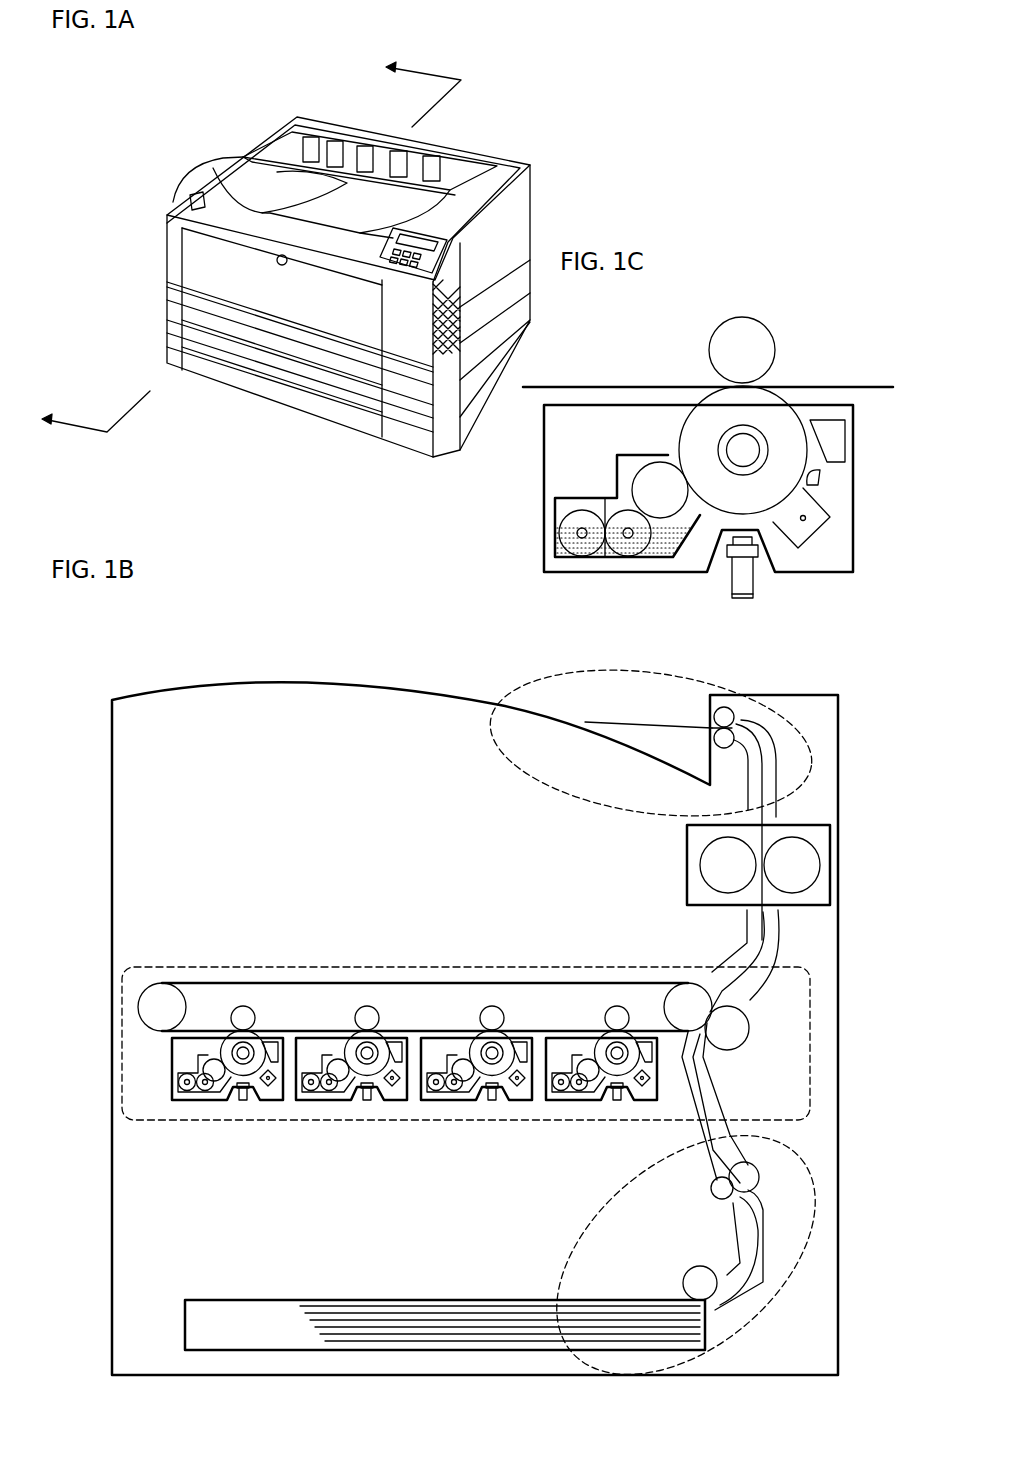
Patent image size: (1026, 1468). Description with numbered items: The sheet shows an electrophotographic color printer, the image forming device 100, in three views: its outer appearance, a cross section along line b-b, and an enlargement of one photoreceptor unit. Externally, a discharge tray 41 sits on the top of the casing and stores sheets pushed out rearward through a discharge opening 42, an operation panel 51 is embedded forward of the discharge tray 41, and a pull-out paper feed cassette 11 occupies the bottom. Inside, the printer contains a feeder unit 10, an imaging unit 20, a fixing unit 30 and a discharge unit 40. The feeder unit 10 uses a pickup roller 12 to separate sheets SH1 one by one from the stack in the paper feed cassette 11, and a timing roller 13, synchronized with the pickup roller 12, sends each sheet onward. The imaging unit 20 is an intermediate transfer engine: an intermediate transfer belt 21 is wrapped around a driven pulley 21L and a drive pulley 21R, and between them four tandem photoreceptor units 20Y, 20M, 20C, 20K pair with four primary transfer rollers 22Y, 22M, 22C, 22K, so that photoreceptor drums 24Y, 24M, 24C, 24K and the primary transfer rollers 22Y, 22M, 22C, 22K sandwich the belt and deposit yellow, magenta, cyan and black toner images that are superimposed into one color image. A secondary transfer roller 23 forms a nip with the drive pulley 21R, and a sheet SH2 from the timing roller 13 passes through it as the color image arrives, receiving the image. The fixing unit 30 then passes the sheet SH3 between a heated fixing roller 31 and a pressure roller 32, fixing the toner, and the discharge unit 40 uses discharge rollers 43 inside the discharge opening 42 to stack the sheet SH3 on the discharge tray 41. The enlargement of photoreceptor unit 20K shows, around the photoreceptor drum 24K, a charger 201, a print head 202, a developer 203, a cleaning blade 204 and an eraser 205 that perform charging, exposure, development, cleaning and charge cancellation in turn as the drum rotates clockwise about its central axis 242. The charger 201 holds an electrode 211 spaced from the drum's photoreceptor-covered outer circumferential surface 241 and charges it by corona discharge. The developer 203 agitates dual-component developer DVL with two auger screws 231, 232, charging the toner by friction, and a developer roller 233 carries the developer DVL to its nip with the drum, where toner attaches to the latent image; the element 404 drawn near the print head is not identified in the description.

In FIG. 1A, the image forming device 100 is at (312, 243).
In FIG. 1B, the image forming device 100 is at (180, 670).
In FIG. 1A, the paper feed cassette 11 is at (200, 345).
In FIG. 1B, the paper feed cassette 11 is at (190, 1310).
In FIG. 1A, the discharge tray 41 is at (317, 165).
In FIG. 1B, the discharge tray 41 is at (578, 725).
In FIG. 1A, the discharge opening 42 is at (357, 142).
In FIG. 1B, the discharge opening 42 is at (710, 722).
In FIG. 1A, the operation panel 51 is at (395, 228).
In FIG. 1B, the feeder unit 10 is at (820, 1240).
In FIG. 1B, the pickup roller 12 is at (698, 1284).
In FIG. 1B, the timing roller 13 is at (760, 1177).
In FIG. 1B, the imaging unit 20 is at (835, 1010).
In FIG. 1B, the photoreceptor unit 20Y is at (221, 1121).
In FIG. 1B, the photoreceptor unit 20M is at (346, 1121).
In FIG. 1B, the photoreceptor unit 20C is at (471, 1121).
In FIG. 1B, the photoreceptor unit 20K is at (596, 1121).
In FIG. 1C, the photoreceptor unit 20K is at (538, 508).
In FIG. 1B, the intermediate transfer belt 21 is at (262, 980).
In FIG. 1C, the intermediate transfer belt 21 is at (573, 385).
In FIG. 1B, the driven pulley 21L is at (158, 1000).
In FIG. 1B, the drive pulley 21R is at (688, 1000).
In FIG. 1B, the primary transfer roller 22Y is at (243, 1010).
In FIG. 1B, the primary transfer roller 22M is at (367, 1010).
In FIG. 1B, the primary transfer roller 22C is at (492, 1010).
In FIG. 1B, the primary transfer roller 22K is at (617, 1010).
In FIG. 1C, the primary transfer roller 22K is at (735, 345).
In FIG. 1B, the secondary transfer roller 23 is at (730, 1032).
In FIG. 1B, the photoreceptor drum 24Y is at (238, 1048).
In FIG. 1B, the photoreceptor drum 24M is at (362, 1048).
In FIG. 1B, the photoreceptor drum 24C is at (487, 1048).
In FIG. 1B, the photoreceptor drum 24K is at (612, 1048).
In FIG. 1C, the photoreceptor drum 24K is at (712, 420).
In FIG. 1B, the fixing unit 30 is at (832, 840).
In FIG. 1B, the fixing roller 31 is at (720, 862).
In FIG. 1B, the pressure roller 32 is at (800, 868).
In FIG. 1B, the discharge unit 40 is at (512, 688).
In FIG. 1B, the discharge rollers 43 is at (725, 715).
In FIG. 1C, the charger 201 is at (830, 512).
In FIG. 1C, the print head 202 is at (750, 552).
In FIG. 1C, the developer 203 is at (615, 477).
In FIG. 1C, the cleaning blade 204 is at (835, 440).
In FIG. 1C, the eraser 205 is at (820, 480).
In FIG. 1C, the electrode 211 is at (806, 521).
In FIG. 1C, the auger screw 231 is at (590, 556).
In FIG. 1C, the auger screw 232 is at (627, 556).
In FIG. 1C, the developer roller 233 is at (663, 500).
In FIG. 1C, the outer circumferential surface 241 is at (762, 432).
In FIG. 1C, the central axis 242 is at (748, 440).
In FIG. 1C, the exposure unit holder 404 is at (740, 585).
In FIG. 1C, the dual-component developer DVL is at (555, 548).
In FIG. 1B, the sheet SH1 is at (760, 1275).
In FIG. 1B, the sheet SH2 is at (695, 1090).
In FIG. 1B, the sheet SH3 is at (778, 750).